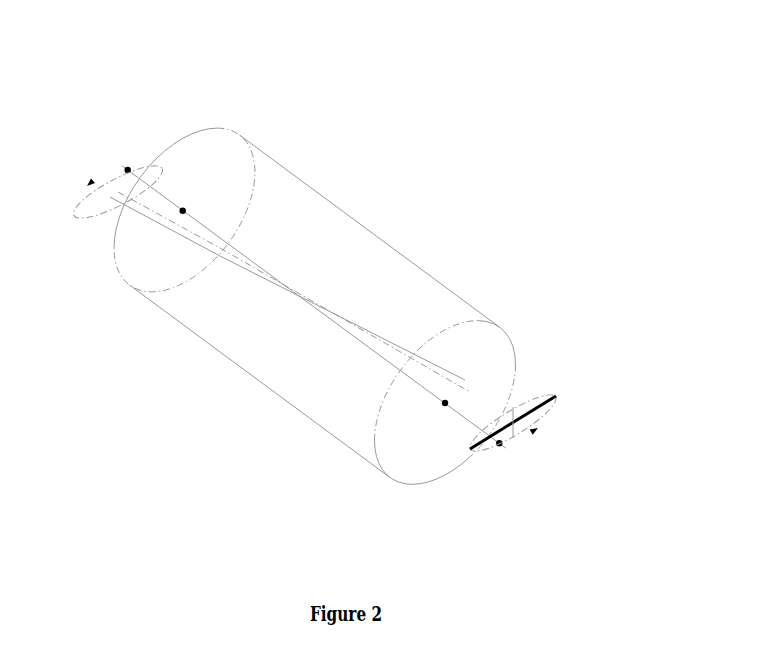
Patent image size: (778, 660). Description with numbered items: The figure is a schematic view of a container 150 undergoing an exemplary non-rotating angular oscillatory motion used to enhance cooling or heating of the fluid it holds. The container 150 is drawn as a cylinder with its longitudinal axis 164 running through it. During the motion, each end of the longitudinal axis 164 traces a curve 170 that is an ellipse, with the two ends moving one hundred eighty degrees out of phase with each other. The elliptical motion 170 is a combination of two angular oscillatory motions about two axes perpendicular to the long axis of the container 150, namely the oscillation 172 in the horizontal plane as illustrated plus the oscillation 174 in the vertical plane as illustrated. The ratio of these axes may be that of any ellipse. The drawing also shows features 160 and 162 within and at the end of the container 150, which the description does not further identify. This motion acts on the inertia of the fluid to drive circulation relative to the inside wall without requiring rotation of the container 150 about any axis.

The container 150 is at (221, 370).
The rotating disk/paddle 160 is at (149, 222).
The rod 162 is at (309, 329).
The longitudinal axis 164 is at (246, 239).
The curve 170 is at (536, 379).
The angular oscillatory motion in the horizontal plane 172 is at (543, 422).
The angular oscillatory motion in the vertical plane 174 is at (526, 438).